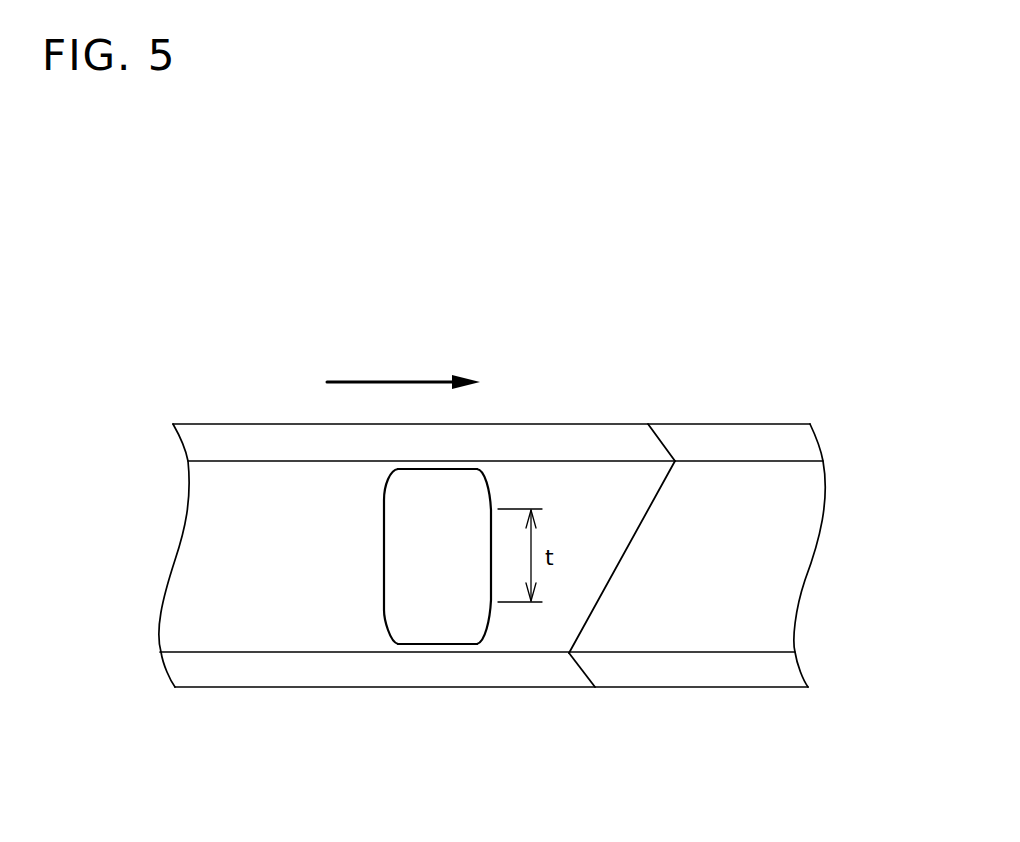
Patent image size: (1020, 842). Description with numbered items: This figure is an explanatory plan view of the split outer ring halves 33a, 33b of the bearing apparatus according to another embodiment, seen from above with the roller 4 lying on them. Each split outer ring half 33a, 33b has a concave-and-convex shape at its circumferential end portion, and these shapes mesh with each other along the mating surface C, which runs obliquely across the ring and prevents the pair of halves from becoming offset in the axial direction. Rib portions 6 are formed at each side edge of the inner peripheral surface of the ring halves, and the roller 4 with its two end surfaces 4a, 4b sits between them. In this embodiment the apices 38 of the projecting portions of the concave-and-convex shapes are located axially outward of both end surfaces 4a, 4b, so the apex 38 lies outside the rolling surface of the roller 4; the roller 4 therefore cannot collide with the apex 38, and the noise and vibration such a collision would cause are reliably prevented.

The roller 4 is at (418, 570).
The end surface of the roller 4a is at (455, 469).
The end surface of the roller 4b is at (430, 647).
The rib portion 6 is at (258, 446).
The split outer ring half 33a is at (592, 480).
The split outer ring half 33b is at (728, 495).
The apex of projecting portion 38 is at (677, 461).
The mating surface C is at (625, 560).